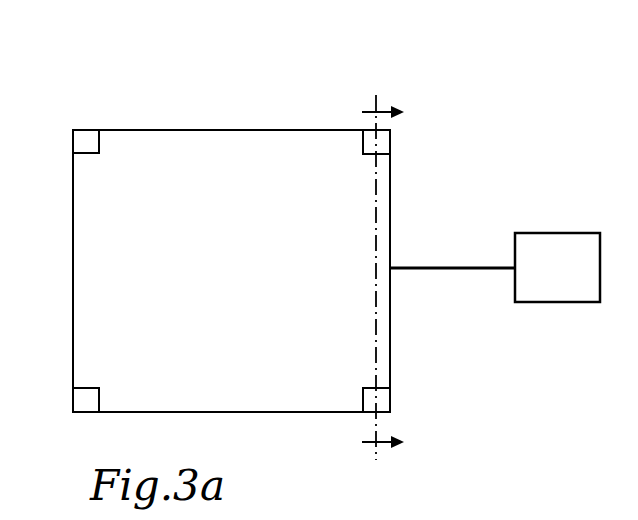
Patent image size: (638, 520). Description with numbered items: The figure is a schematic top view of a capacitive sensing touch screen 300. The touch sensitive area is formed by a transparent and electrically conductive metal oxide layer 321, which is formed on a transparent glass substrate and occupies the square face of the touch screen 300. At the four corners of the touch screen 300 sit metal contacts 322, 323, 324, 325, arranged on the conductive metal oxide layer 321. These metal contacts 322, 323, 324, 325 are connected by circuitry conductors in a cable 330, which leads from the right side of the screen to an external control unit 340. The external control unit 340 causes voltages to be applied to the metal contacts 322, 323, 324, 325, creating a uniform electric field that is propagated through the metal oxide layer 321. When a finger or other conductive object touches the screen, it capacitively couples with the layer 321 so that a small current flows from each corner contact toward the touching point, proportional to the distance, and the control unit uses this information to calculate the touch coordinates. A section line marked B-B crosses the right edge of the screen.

The capacitive sensing touch screen 300 is at (415, 88).
The transparent and electrically conductive metal oxide layer 321 is at (247, 153).
The metal contact 322 is at (86, 140).
The metal contact 323 is at (380, 144).
The metal contact 324 is at (84, 403).
The metal contact 325 is at (381, 398).
The cable 330 is at (433, 267).
The external control unit 340 is at (547, 250).